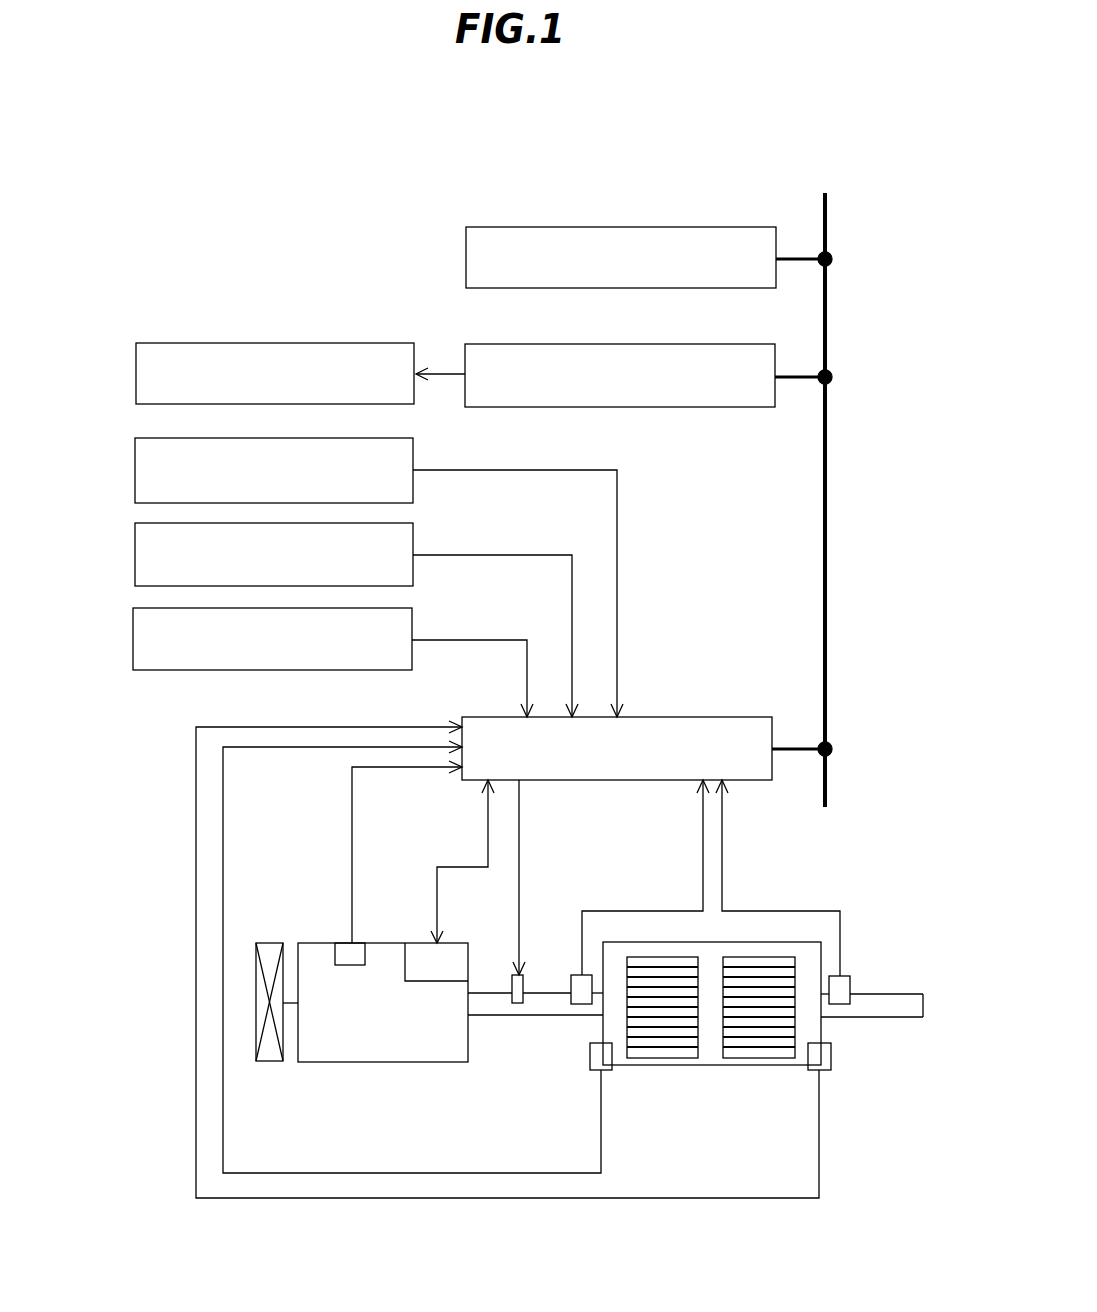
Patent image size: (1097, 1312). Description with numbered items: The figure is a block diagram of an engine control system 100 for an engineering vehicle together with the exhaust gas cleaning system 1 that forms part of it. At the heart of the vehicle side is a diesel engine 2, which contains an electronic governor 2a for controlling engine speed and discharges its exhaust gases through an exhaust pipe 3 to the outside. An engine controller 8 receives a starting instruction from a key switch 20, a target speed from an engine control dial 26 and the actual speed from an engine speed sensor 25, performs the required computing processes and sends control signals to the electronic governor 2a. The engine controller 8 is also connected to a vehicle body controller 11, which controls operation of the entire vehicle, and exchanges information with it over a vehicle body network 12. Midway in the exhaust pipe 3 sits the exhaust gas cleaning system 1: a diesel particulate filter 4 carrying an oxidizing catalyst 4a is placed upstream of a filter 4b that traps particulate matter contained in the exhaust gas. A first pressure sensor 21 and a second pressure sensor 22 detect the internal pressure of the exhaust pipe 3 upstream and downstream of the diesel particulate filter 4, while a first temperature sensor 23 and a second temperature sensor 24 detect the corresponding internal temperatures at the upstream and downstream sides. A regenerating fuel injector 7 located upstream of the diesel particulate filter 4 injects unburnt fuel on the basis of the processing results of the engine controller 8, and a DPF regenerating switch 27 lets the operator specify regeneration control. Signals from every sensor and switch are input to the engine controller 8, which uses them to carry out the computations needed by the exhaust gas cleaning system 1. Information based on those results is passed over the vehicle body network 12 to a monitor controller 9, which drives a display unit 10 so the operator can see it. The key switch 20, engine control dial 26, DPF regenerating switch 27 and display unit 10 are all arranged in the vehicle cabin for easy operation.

The engine control system 100 is at (367, 230).
The exhaust gas cleaning system 1 is at (905, 825).
The diesel engine 2 is at (380, 1062).
The electronic governor 2a is at (415, 955).
The exhaust pipe 3 is at (543, 1000).
The diesel particulate filter 4 is at (712, 994).
The oxidizing catalyst 4a is at (658, 960).
The filter 4b is at (763, 960).
The regenerating fuel injector 7 is at (515, 1003).
The engine controller 8 is at (697, 717).
The monitor controller 9 is at (686, 407).
The display unit 10 is at (136, 372).
The vehicle body controller 11 is at (622, 227).
The vehicle body network 12 is at (825, 497).
The key switch 20 is at (135, 554).
The first pressure sensor 21 is at (580, 1004).
The second pressure sensor 22 is at (845, 983).
The first temperature sensor 23 is at (607, 1073).
The second temperature sensor 24 is at (815, 1073).
The engine speed sensor 25 is at (345, 955).
The engine control dial 26 is at (135, 468).
The DPF regenerating switch 27 is at (133, 639).